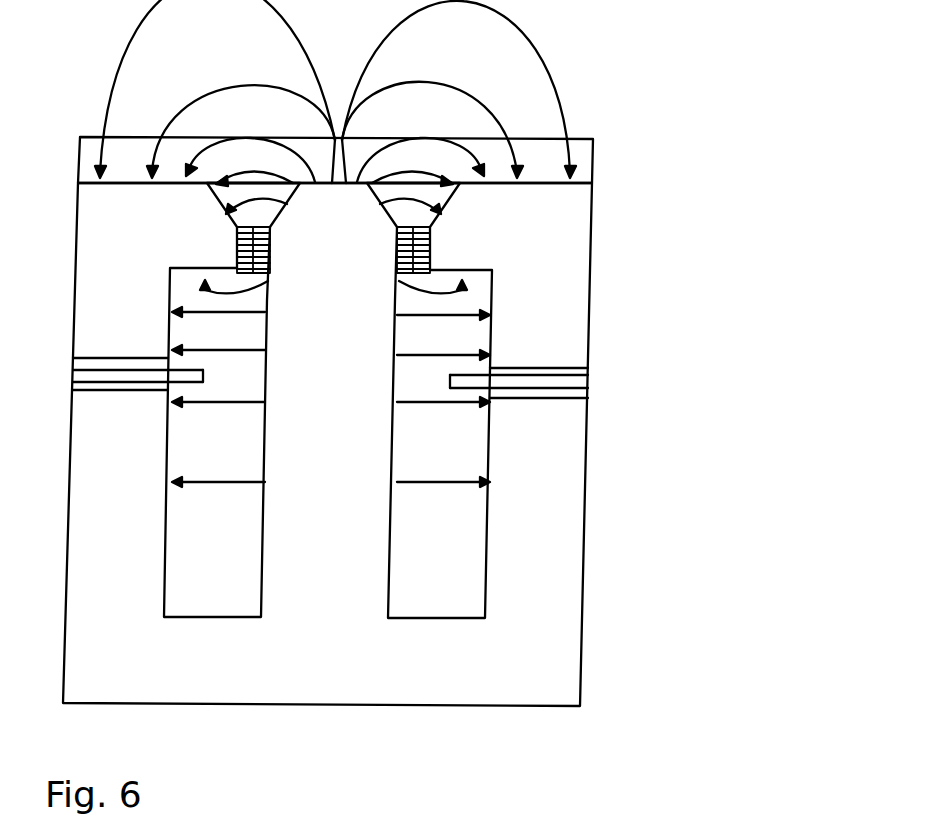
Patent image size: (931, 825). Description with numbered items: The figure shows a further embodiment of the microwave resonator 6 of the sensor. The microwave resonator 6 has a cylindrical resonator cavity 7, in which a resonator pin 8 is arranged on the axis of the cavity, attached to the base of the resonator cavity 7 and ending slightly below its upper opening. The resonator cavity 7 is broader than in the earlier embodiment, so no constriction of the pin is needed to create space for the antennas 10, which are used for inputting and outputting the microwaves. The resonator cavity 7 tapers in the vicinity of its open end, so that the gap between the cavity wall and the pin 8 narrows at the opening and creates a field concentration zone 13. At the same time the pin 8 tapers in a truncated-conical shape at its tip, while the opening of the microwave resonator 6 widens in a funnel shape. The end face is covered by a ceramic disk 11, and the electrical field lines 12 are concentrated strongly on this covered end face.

The microwave resonator 6 is at (560, 245).
The resonator cavity 7 is at (467, 452).
The resonator pin 8 is at (348, 531).
The antennas 10 is at (448, 378).
The ceramic disk 11 is at (593, 170).
The electrical field lines 12 is at (537, 50).
The field concentration zone 13 is at (432, 250).